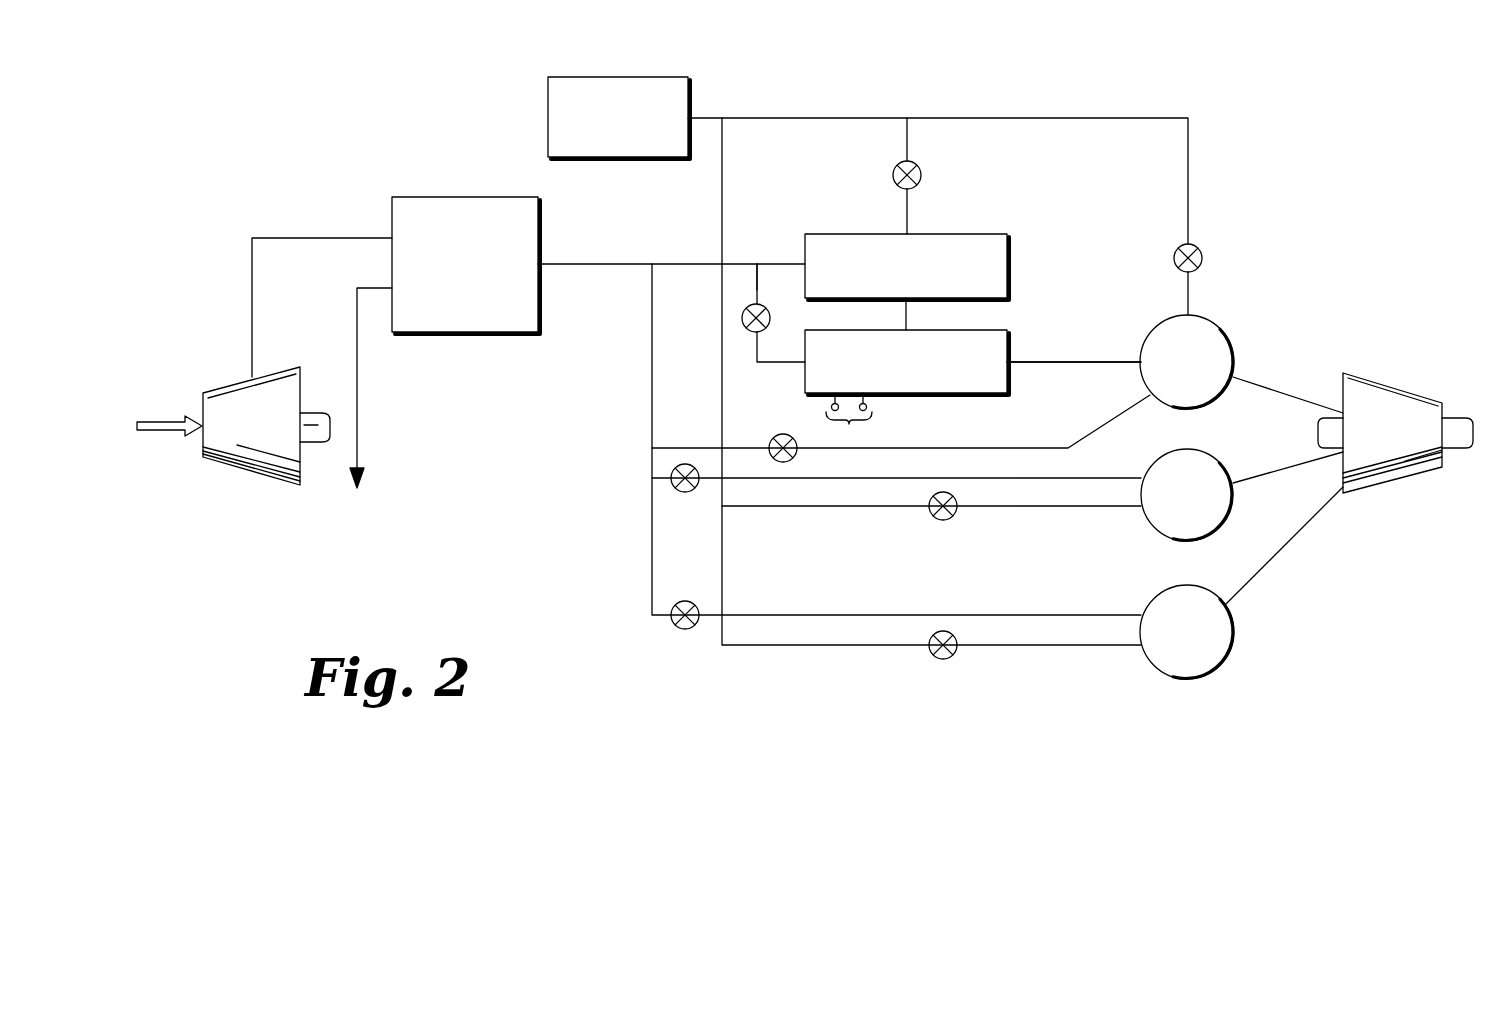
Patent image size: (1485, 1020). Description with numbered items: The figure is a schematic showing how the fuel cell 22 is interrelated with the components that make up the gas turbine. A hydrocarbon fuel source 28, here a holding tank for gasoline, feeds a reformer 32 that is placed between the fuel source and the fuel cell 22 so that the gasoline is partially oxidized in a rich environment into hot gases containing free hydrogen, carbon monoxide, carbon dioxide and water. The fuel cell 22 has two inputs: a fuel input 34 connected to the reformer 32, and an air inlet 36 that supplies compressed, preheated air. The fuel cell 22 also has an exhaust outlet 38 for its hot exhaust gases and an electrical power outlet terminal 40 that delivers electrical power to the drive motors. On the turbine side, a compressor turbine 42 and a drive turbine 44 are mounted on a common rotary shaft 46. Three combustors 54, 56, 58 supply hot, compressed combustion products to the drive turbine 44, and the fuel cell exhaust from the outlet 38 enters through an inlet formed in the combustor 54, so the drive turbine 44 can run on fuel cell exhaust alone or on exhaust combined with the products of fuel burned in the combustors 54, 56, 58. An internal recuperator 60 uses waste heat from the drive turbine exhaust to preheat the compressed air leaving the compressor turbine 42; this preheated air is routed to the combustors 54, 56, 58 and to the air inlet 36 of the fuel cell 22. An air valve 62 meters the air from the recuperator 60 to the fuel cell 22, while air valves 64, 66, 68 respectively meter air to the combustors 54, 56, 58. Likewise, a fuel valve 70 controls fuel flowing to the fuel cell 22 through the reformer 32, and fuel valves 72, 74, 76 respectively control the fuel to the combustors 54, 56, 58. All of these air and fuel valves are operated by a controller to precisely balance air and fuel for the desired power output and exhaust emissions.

The fuel cell 22 is at (1008, 383).
The hydrocarbon fuel source 28 is at (657, 158).
The reformer 32 is at (1008, 263).
The fuel input 34 is at (906, 313).
The air inlet 36 is at (757, 287).
The fuel cell exhaust outlet 38 is at (1068, 362).
The electrical power outlet terminal 40 is at (849, 421).
The compressor turbine 42 is at (233, 392).
The drive turbine 44 is at (1397, 393).
The common rotary shaft 46 is at (320, 413).
The combustor 54 is at (1207, 347).
The combustor 56 is at (1172, 523).
The combustor 58 is at (1172, 655).
The internal recuperator 60 is at (477, 332).
The air valve 62 is at (742, 318).
The air valve 64 is at (783, 463).
The air valve 66 is at (943, 520).
The air valve 68 is at (943, 659).
The fuel valve 70 is at (921, 177).
The fuel valve 72 is at (1208, 260).
The fuel valve 74 is at (685, 492).
The fuel valve 76 is at (685, 629).